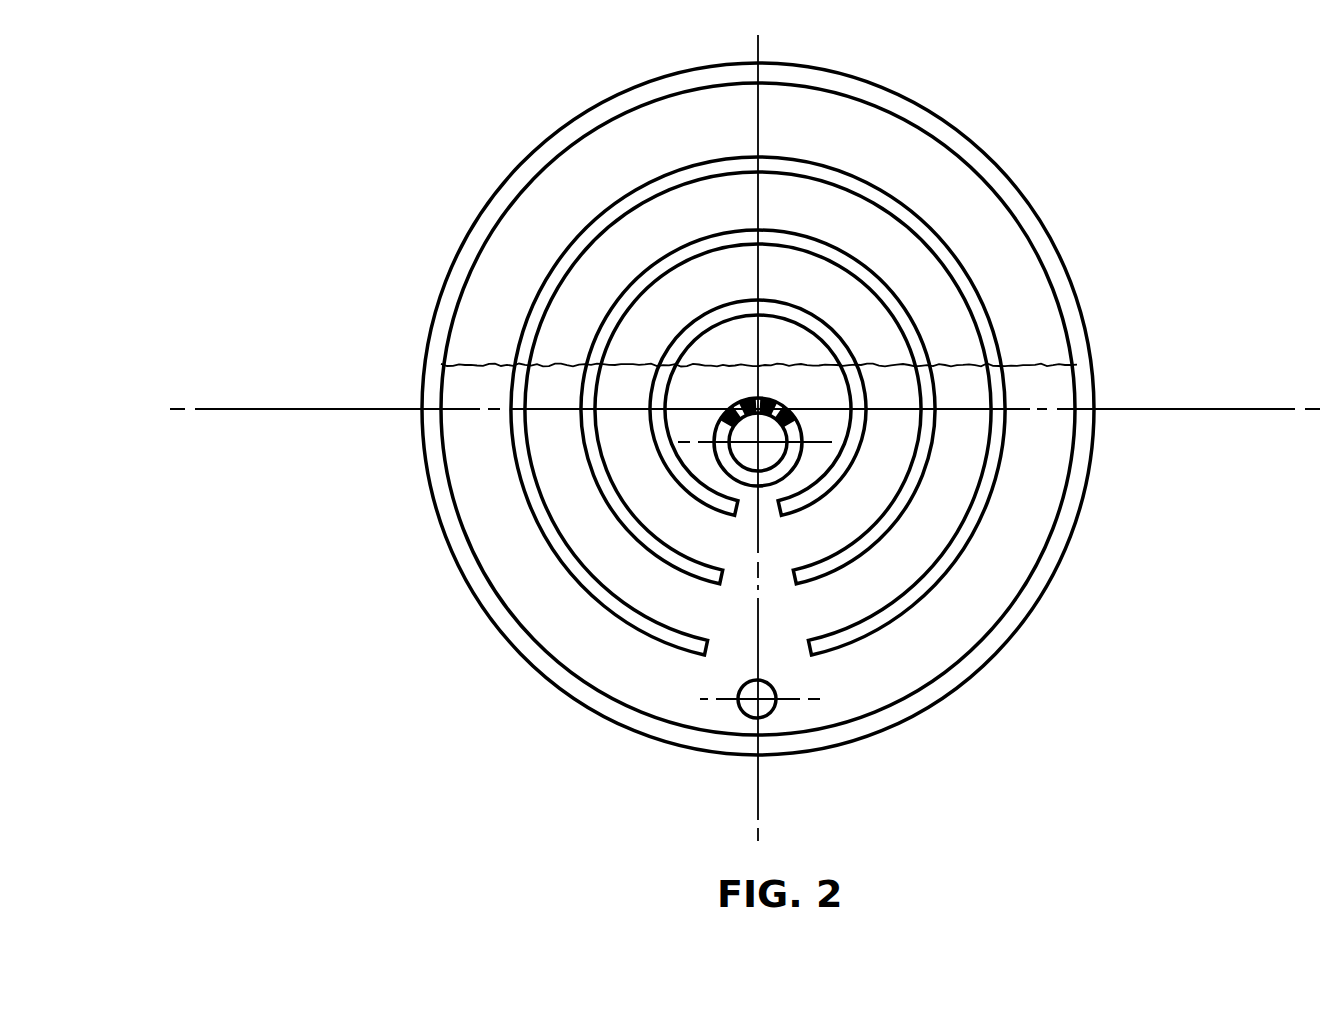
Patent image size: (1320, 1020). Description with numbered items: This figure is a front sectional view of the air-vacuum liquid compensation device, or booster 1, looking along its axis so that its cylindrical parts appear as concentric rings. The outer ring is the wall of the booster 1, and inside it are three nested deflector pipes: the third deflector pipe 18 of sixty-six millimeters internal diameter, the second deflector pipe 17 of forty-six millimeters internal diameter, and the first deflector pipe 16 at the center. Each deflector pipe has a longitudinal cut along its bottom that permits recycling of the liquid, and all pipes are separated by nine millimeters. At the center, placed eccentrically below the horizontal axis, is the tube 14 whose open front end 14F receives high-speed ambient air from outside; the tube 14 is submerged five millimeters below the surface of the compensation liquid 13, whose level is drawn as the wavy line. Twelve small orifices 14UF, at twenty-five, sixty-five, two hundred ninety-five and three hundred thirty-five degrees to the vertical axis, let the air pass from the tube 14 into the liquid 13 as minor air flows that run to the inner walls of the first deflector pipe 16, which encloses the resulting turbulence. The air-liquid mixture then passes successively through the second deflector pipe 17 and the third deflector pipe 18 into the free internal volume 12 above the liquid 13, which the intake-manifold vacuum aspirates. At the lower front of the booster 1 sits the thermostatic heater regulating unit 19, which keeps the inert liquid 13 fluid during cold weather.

The air-vacuum liquid compensation device 1 is at (1057, 260).
The internal volume 12 is at (893, 347).
The compensation liquid 13 is at (735, 647).
The tube 14 is at (742, 472).
The front end of tube 14F is at (742, 452).
The front upper orifices 14UF is at (717, 424).
The first deflector pipe 16 is at (853, 441).
The second deflector pipe 17 is at (915, 483).
The third deflector pipe 18 is at (968, 537).
The thermostatic heater regulating unit 19 is at (770, 712).